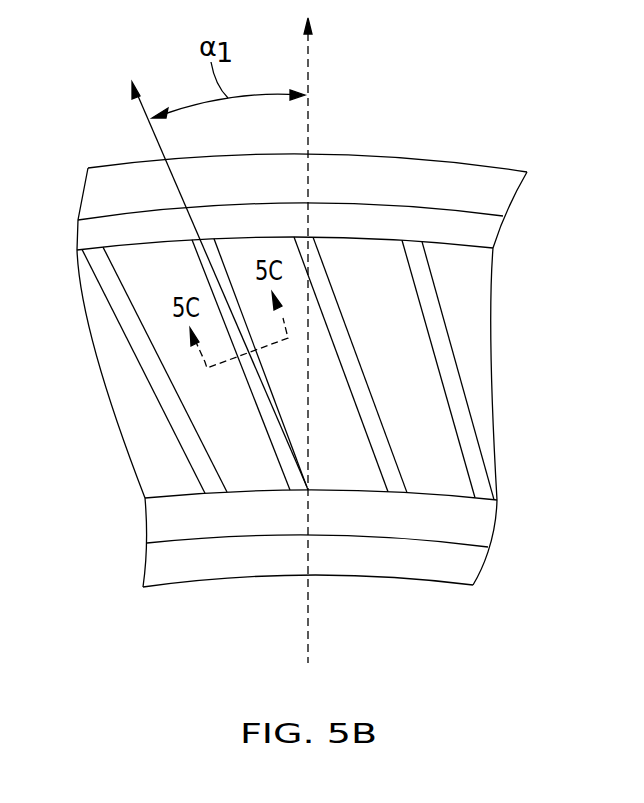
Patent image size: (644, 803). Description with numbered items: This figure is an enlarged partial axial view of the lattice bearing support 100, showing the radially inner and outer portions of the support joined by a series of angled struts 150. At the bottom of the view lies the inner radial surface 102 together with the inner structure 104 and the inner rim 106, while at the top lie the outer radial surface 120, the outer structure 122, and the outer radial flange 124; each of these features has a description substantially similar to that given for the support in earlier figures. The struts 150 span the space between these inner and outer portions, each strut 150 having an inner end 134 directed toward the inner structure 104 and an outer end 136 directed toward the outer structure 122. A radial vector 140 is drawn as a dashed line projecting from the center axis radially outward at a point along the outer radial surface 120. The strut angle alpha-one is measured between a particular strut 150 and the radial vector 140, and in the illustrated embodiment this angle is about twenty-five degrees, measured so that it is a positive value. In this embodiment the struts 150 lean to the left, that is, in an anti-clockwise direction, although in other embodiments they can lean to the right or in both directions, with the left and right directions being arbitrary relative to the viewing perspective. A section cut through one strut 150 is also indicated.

The lattice bearing support 100 is at (542, 130).
The inner radial surface 102 is at (282, 537).
The inner structure 104 is at (360, 518).
The inner rim 106 is at (225, 558).
The outer radial surface 120 is at (338, 202).
The outer structure 122 is at (457, 223).
The outer radial flange 124 is at (423, 160).
The inner end 134 is at (213, 490).
The outer end 136 is at (93, 248).
The radial vector 140 is at (311, 70).
The strut 150 is at (183, 423).